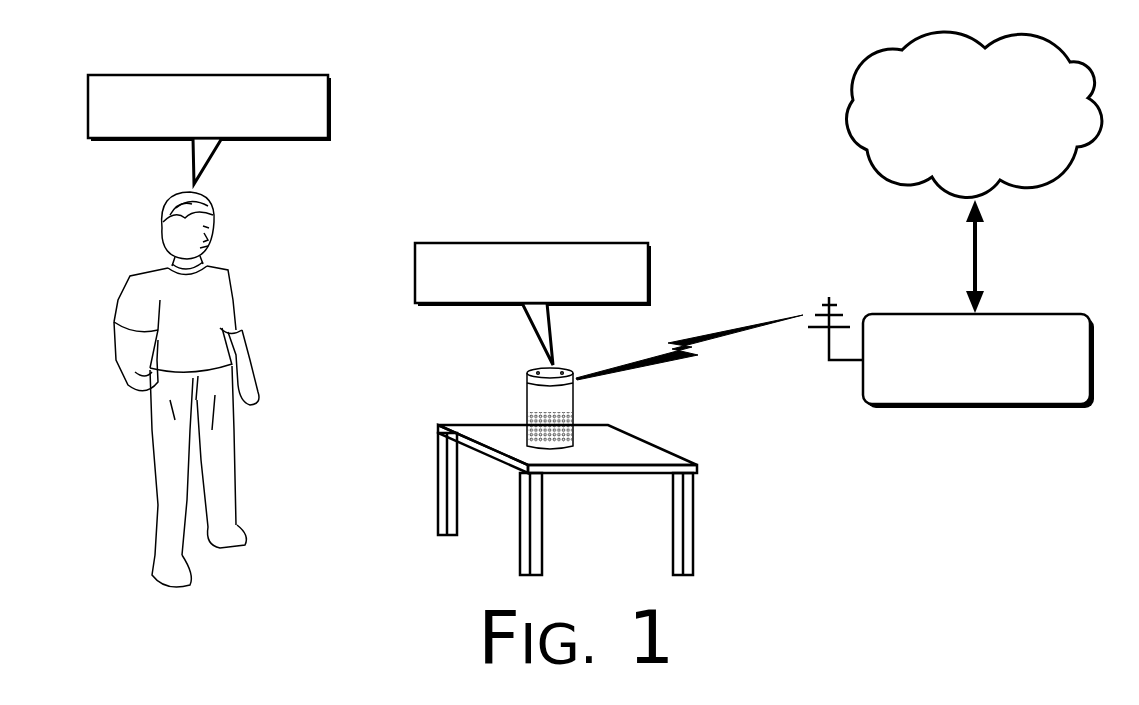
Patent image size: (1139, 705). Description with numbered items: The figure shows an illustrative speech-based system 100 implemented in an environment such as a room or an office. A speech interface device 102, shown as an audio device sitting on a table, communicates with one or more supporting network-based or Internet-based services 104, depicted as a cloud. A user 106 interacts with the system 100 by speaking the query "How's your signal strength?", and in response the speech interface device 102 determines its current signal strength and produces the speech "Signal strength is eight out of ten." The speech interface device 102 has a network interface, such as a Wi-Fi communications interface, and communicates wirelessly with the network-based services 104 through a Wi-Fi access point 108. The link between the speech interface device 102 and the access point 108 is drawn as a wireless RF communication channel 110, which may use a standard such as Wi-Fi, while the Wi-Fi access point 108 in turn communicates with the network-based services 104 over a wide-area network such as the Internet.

The speech-based system 100 is at (490, 62).
The speech interface device 102 is at (566, 400).
The network-based services 104 is at (913, 63).
The user 106 is at (152, 270).
The Wi-Fi access point 108 is at (905, 320).
The RF communication channel 110 is at (716, 332).